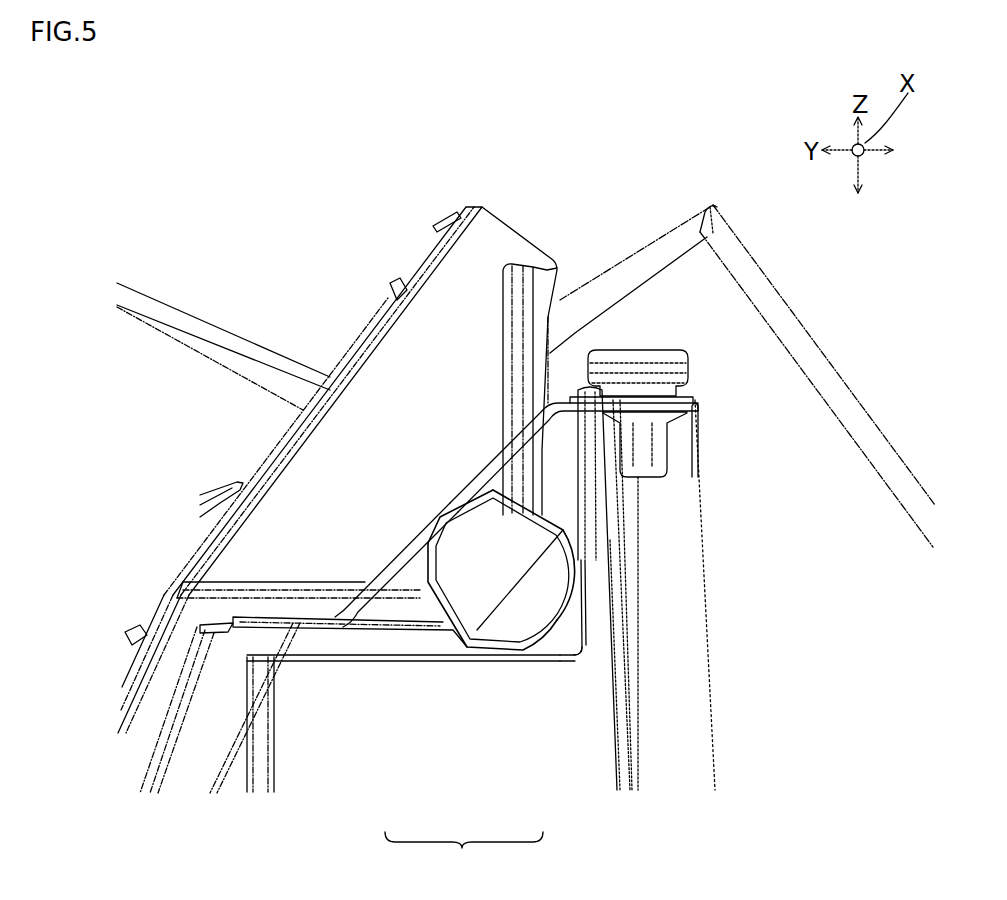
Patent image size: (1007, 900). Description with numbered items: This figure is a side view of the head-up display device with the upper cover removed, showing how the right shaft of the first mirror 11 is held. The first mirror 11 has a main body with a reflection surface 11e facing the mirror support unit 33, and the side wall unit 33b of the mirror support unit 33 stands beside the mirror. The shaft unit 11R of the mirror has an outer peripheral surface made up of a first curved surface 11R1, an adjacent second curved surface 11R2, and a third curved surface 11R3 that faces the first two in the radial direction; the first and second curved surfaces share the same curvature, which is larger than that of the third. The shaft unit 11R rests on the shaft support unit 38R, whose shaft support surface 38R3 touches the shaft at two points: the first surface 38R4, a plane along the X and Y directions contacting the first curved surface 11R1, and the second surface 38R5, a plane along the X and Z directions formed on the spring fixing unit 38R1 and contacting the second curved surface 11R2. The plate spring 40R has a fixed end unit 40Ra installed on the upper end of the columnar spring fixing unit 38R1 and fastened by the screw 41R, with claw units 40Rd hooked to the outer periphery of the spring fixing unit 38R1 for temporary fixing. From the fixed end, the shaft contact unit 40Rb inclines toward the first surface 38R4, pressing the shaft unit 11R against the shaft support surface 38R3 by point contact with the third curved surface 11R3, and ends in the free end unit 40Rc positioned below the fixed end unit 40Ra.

The first mirror 11 is at (517, 230).
The reflection surface 11e is at (138, 708).
The shaft unit 11R is at (567, 605).
The first curved surface 11R1 is at (498, 652).
The second curved surface 11R2 is at (580, 573).
The third curved surface 11R3 is at (442, 518).
The mirror support unit 33 is at (768, 279).
The side wall unit 33b is at (710, 272).
The shaft support unit 38R is at (705, 567).
The spring fixing unit 38R1 is at (692, 477).
The shaft support surface 38R3 is at (464, 856).
The first surface 38R4 is at (397, 648).
The second surface 38R5 is at (570, 650).
The plate spring 40R is at (460, 480).
The fixed end unit 40Ra is at (690, 403).
The shaft contact unit 40Rb is at (413, 537).
The free end unit 40Rc is at (233, 617).
The claw unit 40Rd is at (642, 452).
The screw 41R is at (599, 347).